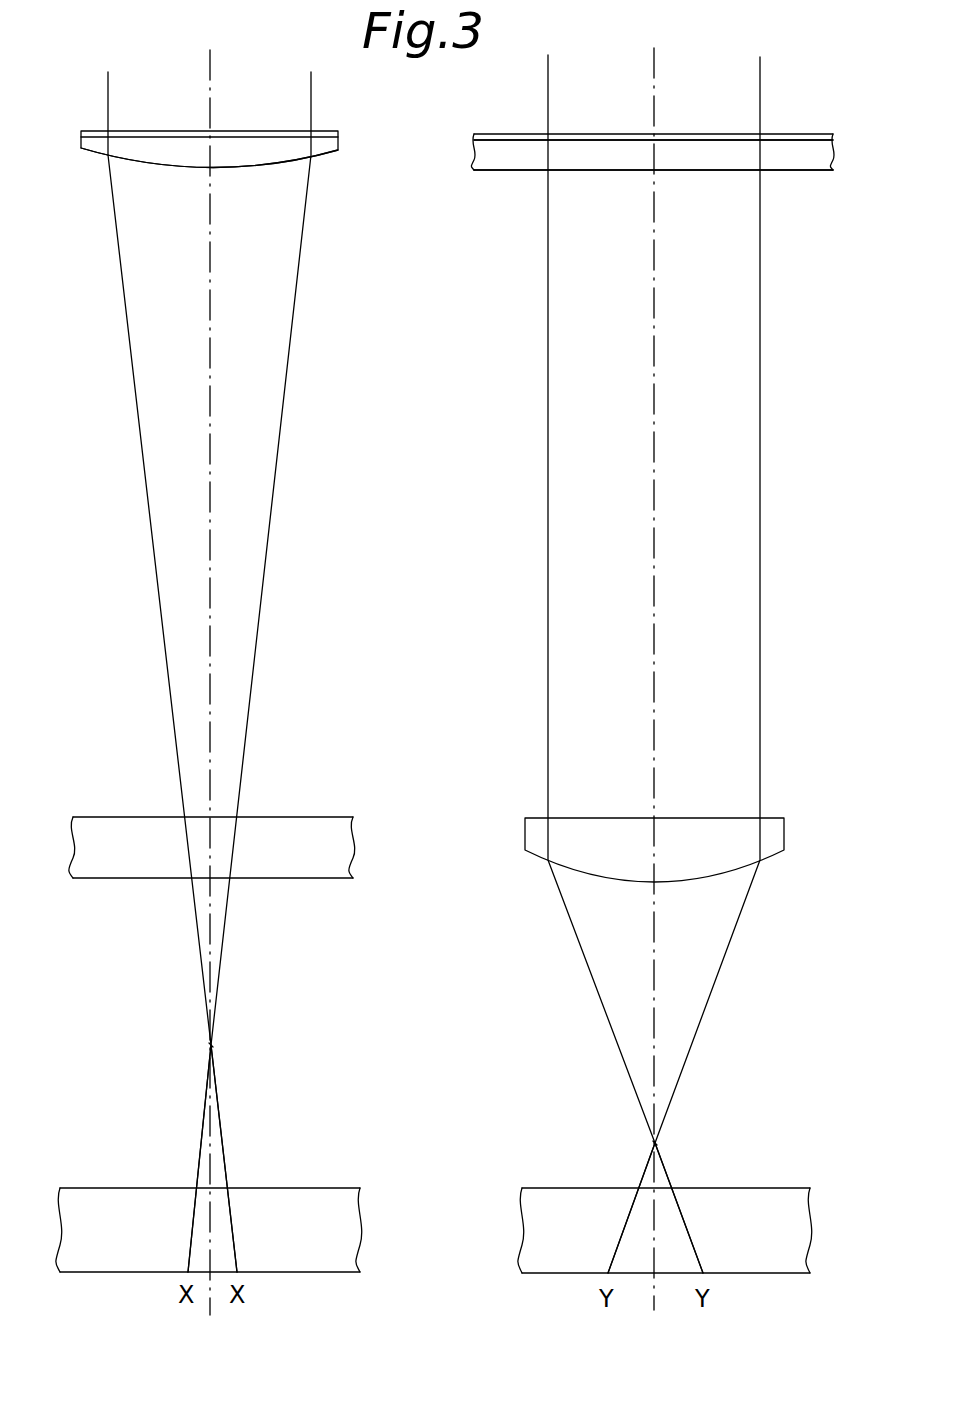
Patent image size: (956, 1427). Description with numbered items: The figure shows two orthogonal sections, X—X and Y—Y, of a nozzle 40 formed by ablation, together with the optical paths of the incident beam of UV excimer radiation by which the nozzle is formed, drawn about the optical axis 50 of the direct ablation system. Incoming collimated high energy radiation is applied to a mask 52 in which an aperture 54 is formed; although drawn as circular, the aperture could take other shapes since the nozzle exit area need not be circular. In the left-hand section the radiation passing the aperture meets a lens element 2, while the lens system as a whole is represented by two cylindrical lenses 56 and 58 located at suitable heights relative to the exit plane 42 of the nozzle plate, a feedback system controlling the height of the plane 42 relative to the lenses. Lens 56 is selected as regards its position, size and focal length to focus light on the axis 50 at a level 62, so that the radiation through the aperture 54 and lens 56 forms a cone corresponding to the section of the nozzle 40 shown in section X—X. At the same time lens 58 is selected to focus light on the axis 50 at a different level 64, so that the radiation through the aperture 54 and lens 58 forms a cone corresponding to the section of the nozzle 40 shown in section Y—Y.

The lens 2 is at (98, 130).
The nozzle 40 is at (232, 1210).
The exit plane 42 is at (115, 1185).
The optical axis 50 is at (207, 103).
The mask 52 is at (813, 138).
The aperture 54 is at (285, 127).
The cylindrical lens 56 is at (325, 157).
The cylindrical lens 58 is at (307, 812).
The level 62 is at (217, 1052).
The level 64 is at (657, 1148).